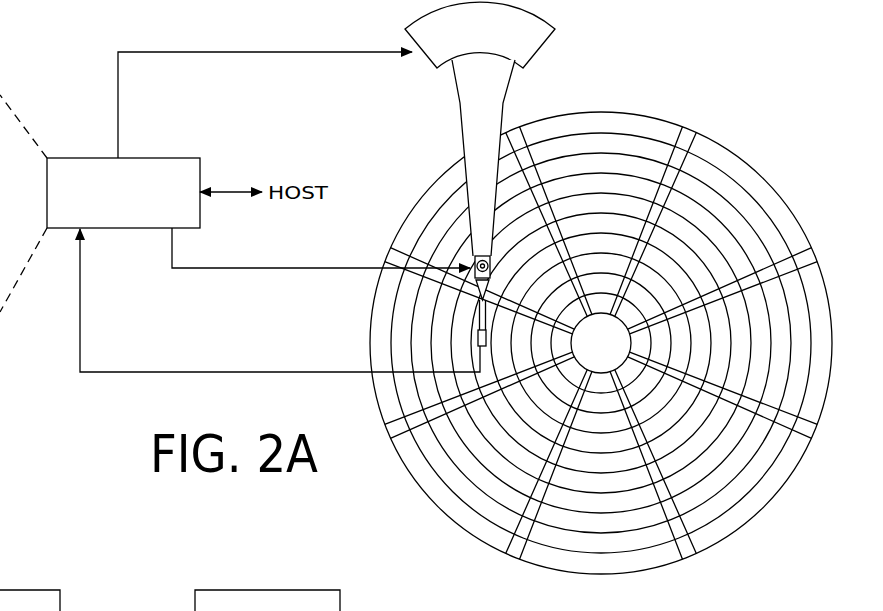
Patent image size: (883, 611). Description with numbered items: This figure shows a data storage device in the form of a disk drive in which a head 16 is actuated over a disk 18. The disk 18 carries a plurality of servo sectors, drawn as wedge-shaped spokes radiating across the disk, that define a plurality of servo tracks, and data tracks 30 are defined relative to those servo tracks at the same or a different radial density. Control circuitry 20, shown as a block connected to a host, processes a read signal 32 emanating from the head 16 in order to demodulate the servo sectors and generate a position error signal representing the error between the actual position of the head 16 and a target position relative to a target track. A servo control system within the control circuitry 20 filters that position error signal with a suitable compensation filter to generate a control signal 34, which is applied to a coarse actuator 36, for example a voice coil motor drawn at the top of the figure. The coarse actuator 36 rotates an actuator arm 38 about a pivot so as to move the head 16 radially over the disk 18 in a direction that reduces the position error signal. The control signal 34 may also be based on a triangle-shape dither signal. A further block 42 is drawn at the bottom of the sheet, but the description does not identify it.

The head 16 is at (476, 337).
The disk 18 is at (601, 336).
The control circuitry 20 is at (163, 157).
The data track 30 is at (592, 140).
The read signal 32 is at (257, 372).
The control signal 34 is at (117, 100).
The coarse actuator 36 is at (422, 64).
The actuator arm 38 is at (461, 128).
The control circuitry block 42 is at (120, 610).